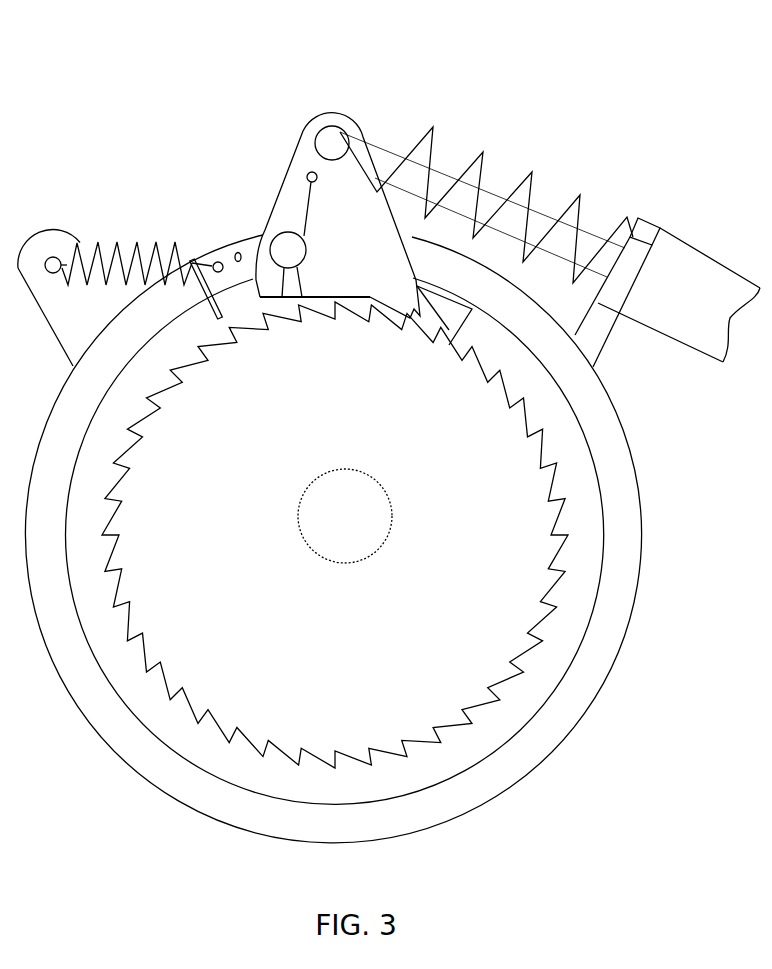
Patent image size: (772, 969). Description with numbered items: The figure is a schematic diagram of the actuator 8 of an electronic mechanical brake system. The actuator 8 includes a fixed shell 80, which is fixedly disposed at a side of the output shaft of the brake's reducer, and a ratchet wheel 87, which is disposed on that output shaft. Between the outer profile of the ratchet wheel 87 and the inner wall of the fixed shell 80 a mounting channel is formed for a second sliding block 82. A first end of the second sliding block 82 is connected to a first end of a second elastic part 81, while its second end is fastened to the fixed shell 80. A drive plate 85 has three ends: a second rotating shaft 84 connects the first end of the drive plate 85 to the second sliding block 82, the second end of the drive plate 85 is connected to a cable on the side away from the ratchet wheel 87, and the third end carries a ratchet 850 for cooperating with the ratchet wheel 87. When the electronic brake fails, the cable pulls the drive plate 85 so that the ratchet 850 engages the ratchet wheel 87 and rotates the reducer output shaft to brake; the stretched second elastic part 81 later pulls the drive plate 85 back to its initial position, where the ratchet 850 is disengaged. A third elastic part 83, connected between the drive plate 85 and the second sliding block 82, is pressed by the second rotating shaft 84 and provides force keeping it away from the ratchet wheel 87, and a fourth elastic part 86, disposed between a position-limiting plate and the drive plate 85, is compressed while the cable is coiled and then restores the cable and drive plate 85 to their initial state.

The actuator 8 is at (133, 48).
The fixed shell 80 is at (105, 343).
The second elastic part 81 is at (140, 275).
The second sliding block 82 is at (198, 262).
The third elastic part 83 is at (252, 274).
The second rotating shaft 84 is at (293, 247).
The drive plate 85 is at (343, 190).
The ratchet 850 is at (410, 314).
The fourth elastic part 86 is at (415, 393).
The ratchet wheel 87 is at (414, 280).